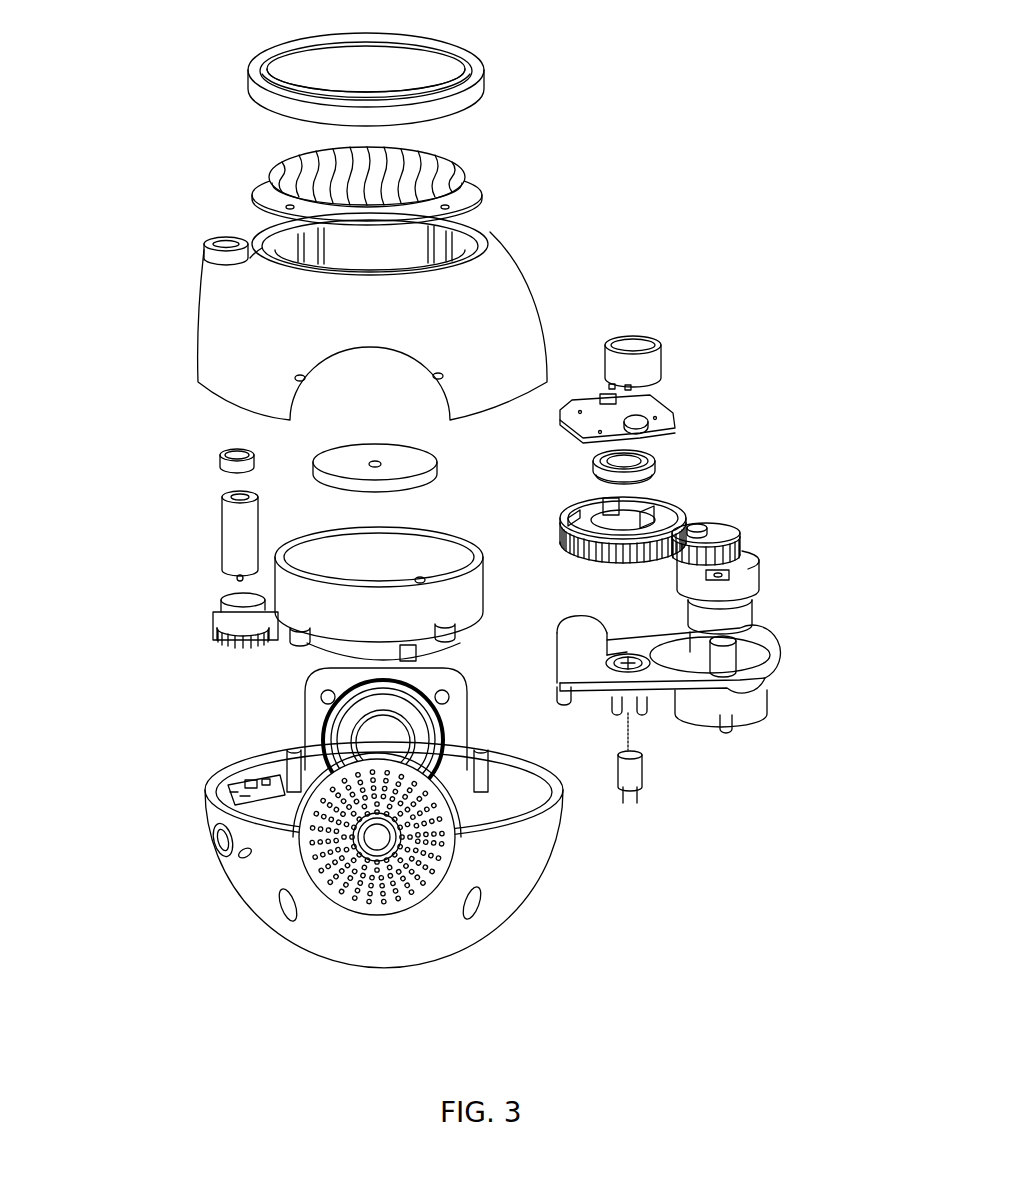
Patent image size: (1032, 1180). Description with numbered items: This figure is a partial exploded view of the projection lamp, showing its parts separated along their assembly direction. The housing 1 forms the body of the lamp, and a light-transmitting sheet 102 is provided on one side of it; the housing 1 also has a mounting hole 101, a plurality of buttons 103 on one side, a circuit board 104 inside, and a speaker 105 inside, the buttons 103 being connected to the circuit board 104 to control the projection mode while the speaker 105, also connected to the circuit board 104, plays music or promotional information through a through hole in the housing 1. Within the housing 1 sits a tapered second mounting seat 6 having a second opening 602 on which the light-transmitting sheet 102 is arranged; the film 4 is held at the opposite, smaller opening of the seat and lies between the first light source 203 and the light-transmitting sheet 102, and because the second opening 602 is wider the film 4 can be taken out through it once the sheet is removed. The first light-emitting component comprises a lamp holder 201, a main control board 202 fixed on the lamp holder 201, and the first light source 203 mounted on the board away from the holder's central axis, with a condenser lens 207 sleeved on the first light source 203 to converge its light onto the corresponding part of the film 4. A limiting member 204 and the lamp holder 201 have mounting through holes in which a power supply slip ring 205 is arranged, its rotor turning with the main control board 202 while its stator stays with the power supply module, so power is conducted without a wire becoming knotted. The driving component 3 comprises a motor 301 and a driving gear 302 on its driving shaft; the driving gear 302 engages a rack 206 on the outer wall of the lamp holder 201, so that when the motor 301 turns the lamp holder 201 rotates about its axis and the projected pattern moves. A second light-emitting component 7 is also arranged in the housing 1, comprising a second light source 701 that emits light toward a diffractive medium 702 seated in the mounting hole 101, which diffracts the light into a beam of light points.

The housing 1 is at (223, 292).
The mounting hole 101 is at (220, 240).
The light-transmitting sheet 102 is at (257, 182).
The button 103 is at (230, 838).
The circuit board 104 is at (260, 803).
The speaker 105 is at (348, 723).
The film 4 is at (332, 452).
The second light-emitting component 7 is at (60, 430).
The second light source 701 is at (230, 508).
The diffractive medium 702 is at (222, 455).
The second mounting seat 6 is at (292, 600).
The second opening 602 is at (285, 558).
The lamp holder 201 is at (680, 503).
The main control board 202 is at (680, 423).
The first light source 203 is at (648, 417).
The limiting member 204 is at (658, 467).
The power supply slip ring 205 is at (633, 770).
The rack 206 is at (668, 547).
The condenser lens 207 is at (658, 363).
The driving component 3 is at (895, 580).
The motor 301 is at (740, 595).
The driving gear 302 is at (740, 551).